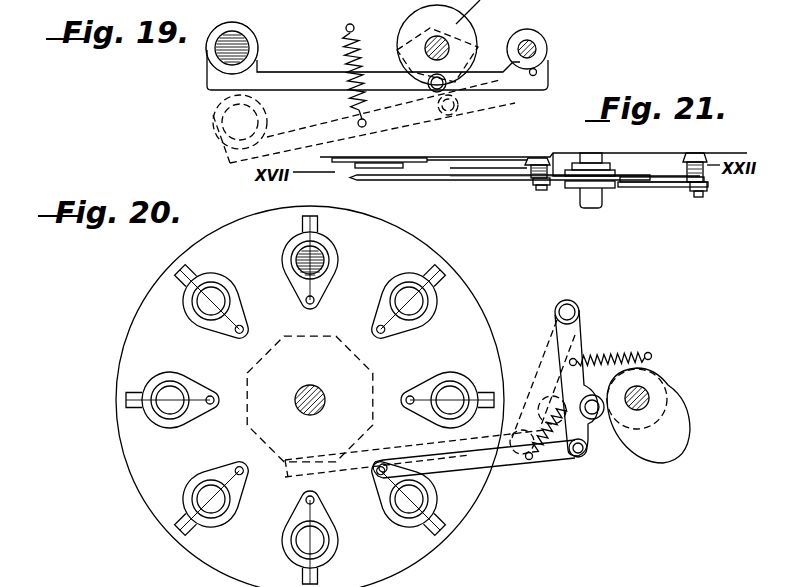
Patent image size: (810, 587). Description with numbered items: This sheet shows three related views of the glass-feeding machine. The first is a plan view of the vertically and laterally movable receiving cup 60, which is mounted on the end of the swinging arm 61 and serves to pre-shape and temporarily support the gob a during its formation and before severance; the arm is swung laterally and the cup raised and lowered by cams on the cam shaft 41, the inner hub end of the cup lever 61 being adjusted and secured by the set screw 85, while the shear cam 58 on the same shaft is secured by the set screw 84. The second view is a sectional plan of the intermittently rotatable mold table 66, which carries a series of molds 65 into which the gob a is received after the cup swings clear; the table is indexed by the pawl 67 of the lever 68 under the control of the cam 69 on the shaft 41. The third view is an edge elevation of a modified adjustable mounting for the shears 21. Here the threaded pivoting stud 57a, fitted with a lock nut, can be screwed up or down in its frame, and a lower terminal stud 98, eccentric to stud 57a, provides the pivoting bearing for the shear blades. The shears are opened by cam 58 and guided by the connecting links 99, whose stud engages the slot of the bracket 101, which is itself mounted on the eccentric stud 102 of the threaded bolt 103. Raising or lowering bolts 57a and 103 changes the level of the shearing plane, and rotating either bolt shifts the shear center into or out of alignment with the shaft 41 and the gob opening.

In FIG. 19, the receiving cup 60 is at (212, 57).
In FIG. 19, the swinging arm 61 is at (310, 83).
In FIG. 19, the set screw 84 is at (272, 12).
In FIG. 19, the set screw 85 is at (533, 76).
In FIG. 19, the cam shaft 41 is at (447, 47).
In FIG. 21, the cam shaft 41 is at (593, 159).
In FIG. 20, the cam shaft 41 is at (645, 392).
In FIG. 19, the gob a is at (246, 42).
In FIG. 20, the gob a is at (327, 255).
In FIG. 21, the shears 21 is at (437, 180).
In FIG. 21, the pivoting stud 57a is at (525, 180).
In FIG. 21, the lower terminal stud 98 is at (542, 191).
In FIG. 21, the shear cam 58 is at (603, 191).
In FIG. 21, the connecting links 99 is at (687, 165).
In FIG. 21, the bracket 101 is at (663, 187).
In FIG. 21, the eccentrically located stud 102 is at (698, 197).
In FIG. 21, the threaded stem or bolt 103 is at (704, 165).
In FIG. 20, the rotatable table 66 is at (155, 490).
In FIG. 20, the molds 65 is at (290, 547).
In FIG. 20, the pawl 67 is at (497, 465).
In FIG. 20, the lever 68 is at (572, 343).
In FIG. 20, the cam 69 is at (677, 413).